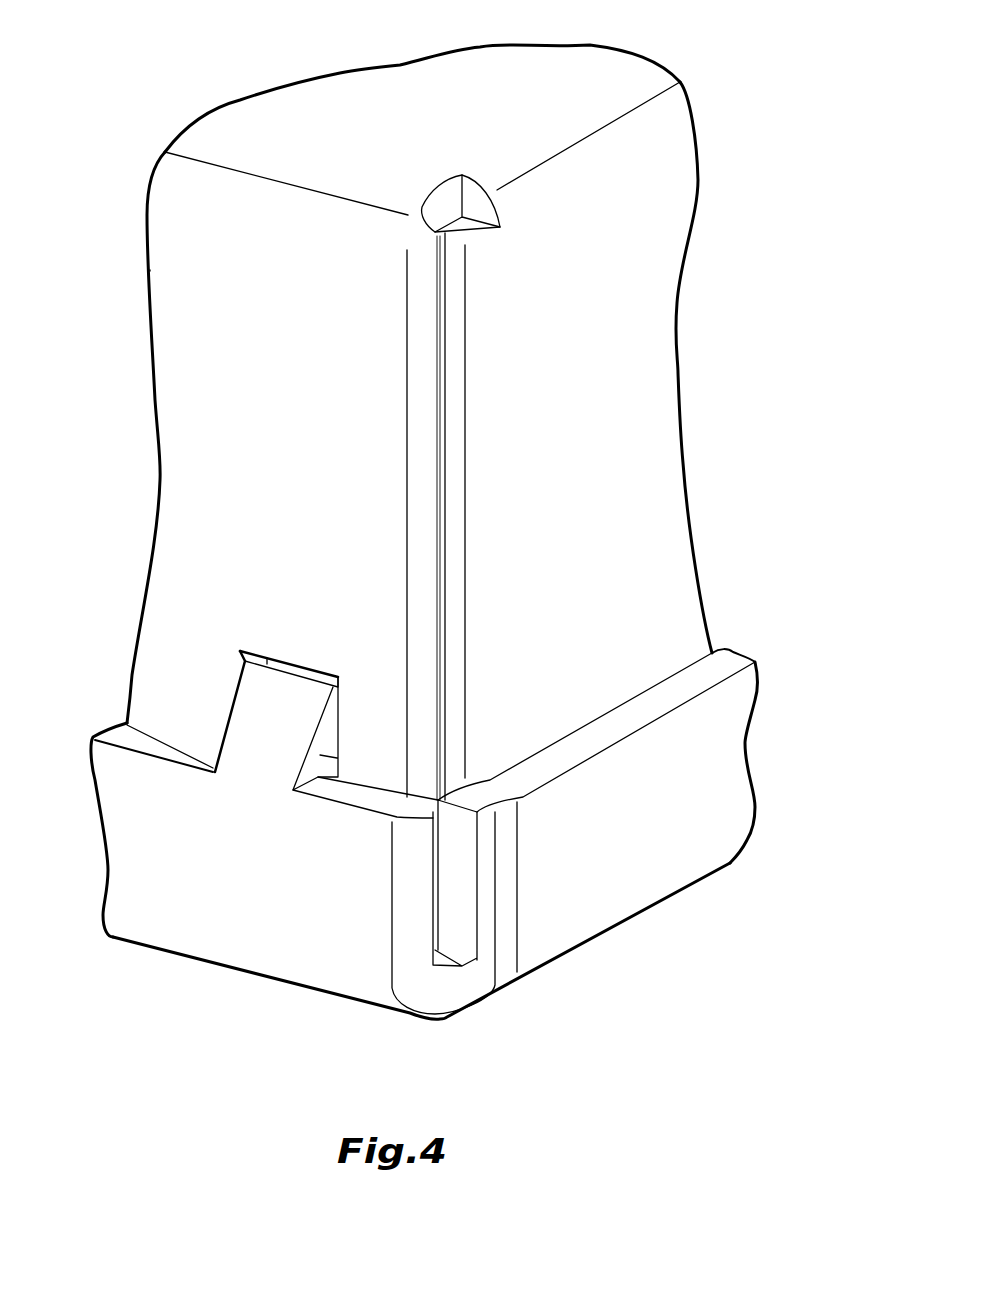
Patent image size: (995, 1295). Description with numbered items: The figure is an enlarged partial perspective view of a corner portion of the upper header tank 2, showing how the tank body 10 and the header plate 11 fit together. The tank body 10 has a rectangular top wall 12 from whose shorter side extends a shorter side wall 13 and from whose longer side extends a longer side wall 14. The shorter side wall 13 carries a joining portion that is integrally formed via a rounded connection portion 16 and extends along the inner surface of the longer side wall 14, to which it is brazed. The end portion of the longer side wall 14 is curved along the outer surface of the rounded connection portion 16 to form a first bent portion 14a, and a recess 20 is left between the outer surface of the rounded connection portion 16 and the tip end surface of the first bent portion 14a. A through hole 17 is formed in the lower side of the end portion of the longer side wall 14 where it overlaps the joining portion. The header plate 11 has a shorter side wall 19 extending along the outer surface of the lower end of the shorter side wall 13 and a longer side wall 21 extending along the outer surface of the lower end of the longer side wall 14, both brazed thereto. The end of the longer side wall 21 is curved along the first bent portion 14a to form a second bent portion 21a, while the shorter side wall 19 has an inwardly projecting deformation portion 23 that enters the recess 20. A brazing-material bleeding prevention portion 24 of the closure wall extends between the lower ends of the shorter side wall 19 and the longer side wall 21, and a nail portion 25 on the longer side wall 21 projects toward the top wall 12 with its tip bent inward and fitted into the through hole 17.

The upper header tank 2 is at (451, 553).
The tank body 10 is at (417, 406).
The header plate 11 is at (469, 838).
The top wall 12 is at (377, 127).
The shorter side wall 13 is at (650, 463).
The longer side wall 14 is at (178, 354).
The first bent portion 14a is at (417, 473).
The rounded connection portion 16 is at (466, 350).
The through hole 17 is at (293, 662).
The shorter side wall 19 is at (693, 858).
The recess 20 is at (447, 522).
The longer side wall 21 is at (195, 927).
The second bent portion 21a is at (403, 880).
The deformation portion 23 is at (490, 868).
The brazing-material bleeding prevention portion 24 is at (452, 995).
The nail portion 25 is at (240, 702).